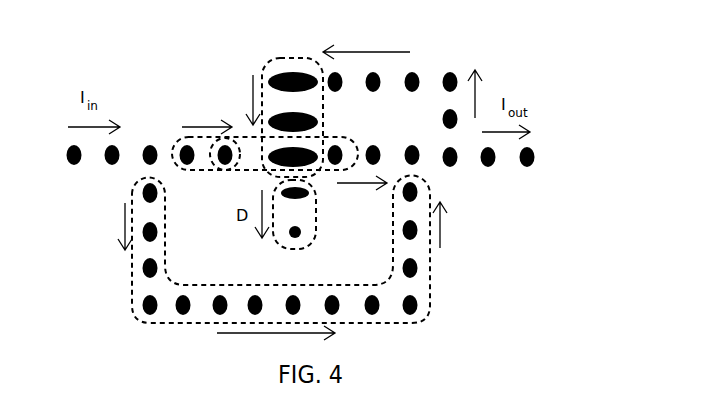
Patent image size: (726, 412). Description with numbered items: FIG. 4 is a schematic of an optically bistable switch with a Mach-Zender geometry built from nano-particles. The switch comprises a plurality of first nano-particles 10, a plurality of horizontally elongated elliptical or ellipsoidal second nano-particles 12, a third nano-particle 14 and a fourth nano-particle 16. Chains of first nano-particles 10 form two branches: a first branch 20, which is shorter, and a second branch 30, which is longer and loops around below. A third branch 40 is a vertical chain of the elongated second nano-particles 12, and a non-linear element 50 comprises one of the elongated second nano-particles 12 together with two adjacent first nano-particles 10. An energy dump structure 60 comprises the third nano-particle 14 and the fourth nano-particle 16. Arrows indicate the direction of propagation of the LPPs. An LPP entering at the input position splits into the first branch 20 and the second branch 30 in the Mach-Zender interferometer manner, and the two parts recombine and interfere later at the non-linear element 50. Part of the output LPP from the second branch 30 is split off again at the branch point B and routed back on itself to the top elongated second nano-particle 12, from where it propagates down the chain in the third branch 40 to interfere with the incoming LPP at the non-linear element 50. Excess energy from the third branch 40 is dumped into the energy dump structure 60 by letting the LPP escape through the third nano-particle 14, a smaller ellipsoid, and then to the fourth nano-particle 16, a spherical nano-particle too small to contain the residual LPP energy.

The first nano-particles 10 is at (112, 161).
The second nano-particles 12 is at (283, 74).
The third nano-particle 14 is at (306, 193).
The fourth nano-particle 16 is at (301, 233).
The first branch 20 is at (184, 138).
The second branch 30 is at (432, 270).
The third branch 40 is at (324, 103).
The non-linear element 50 is at (350, 140).
The energy dump structure 60 is at (278, 242).
The branch point B is at (452, 165).